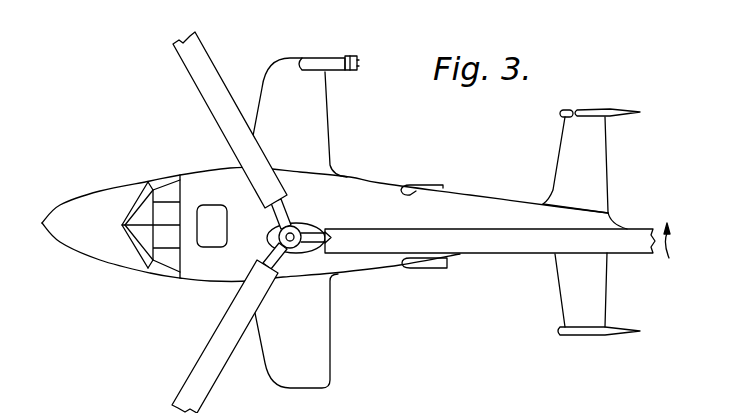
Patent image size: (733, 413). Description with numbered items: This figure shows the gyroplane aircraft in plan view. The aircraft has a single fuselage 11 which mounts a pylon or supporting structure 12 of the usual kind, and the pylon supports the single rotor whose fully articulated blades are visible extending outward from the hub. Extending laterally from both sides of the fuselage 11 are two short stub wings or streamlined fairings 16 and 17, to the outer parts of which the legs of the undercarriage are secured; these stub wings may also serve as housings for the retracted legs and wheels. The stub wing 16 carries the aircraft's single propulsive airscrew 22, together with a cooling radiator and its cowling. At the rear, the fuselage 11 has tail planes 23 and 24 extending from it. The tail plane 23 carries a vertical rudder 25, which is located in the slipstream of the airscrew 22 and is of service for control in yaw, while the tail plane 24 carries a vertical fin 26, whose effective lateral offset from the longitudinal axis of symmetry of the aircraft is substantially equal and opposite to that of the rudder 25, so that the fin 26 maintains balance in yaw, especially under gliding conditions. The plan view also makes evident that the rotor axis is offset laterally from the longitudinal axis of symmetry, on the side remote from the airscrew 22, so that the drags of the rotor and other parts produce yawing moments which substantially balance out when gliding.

The fuselage 11 is at (375, 180).
The pylon 12 is at (275, 240).
The stub wing 16 is at (317, 123).
The stub wing 17 is at (315, 343).
The propulsive airscrew 22 is at (350, 57).
The tail plane 23 is at (592, 163).
The tail plane 24 is at (592, 297).
The vertical rudder 25 is at (580, 112).
The vertical fin 26 is at (602, 335).